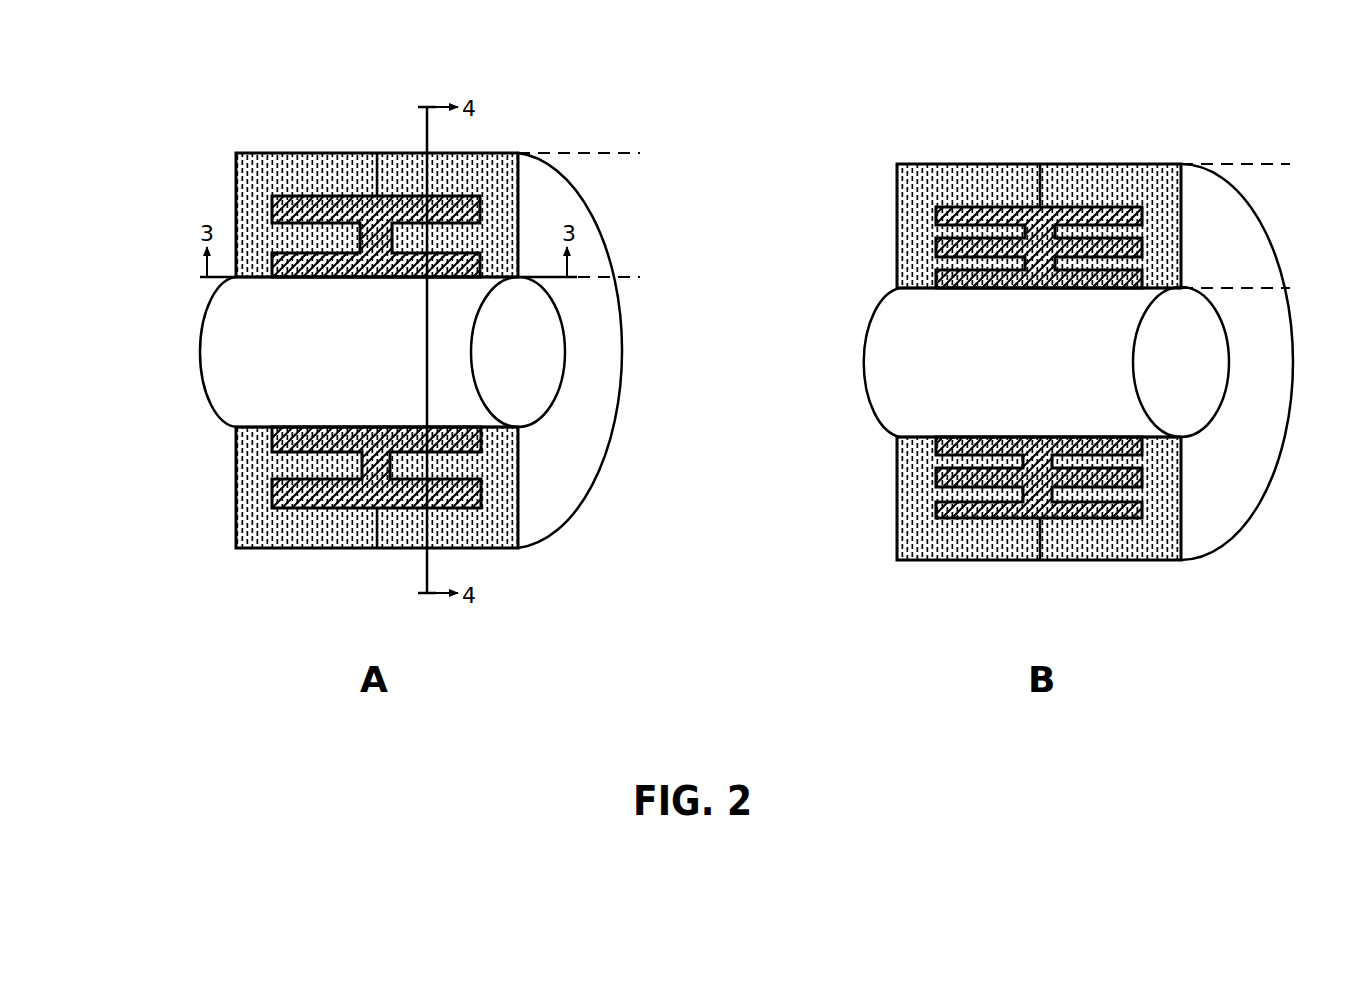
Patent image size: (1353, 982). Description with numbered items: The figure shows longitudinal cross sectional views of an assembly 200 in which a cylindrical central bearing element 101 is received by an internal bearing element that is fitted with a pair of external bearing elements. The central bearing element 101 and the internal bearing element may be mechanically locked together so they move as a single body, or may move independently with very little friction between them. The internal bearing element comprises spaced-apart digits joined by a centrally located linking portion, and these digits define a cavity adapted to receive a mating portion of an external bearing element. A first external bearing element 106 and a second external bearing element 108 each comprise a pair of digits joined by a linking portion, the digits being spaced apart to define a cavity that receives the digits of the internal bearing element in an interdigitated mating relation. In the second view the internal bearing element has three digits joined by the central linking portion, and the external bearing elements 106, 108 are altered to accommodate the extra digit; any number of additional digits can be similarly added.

In FIG. 2A, the assembly 200 is at (525, 103).
In FIG. 2A, the cylindrical central bearing element 101 is at (250, 340).
In FIG. 2B, the cylindrical central bearing element 101 is at (910, 348).
In FIG. 2A, the first external bearing element 106 is at (643, 153).
In FIG. 2B, the first external bearing element 106 is at (1292, 164).
In FIG. 2A, the second external bearing element 108 is at (311, 307).
In FIG. 2B, the second external bearing element 108 is at (885, 437).